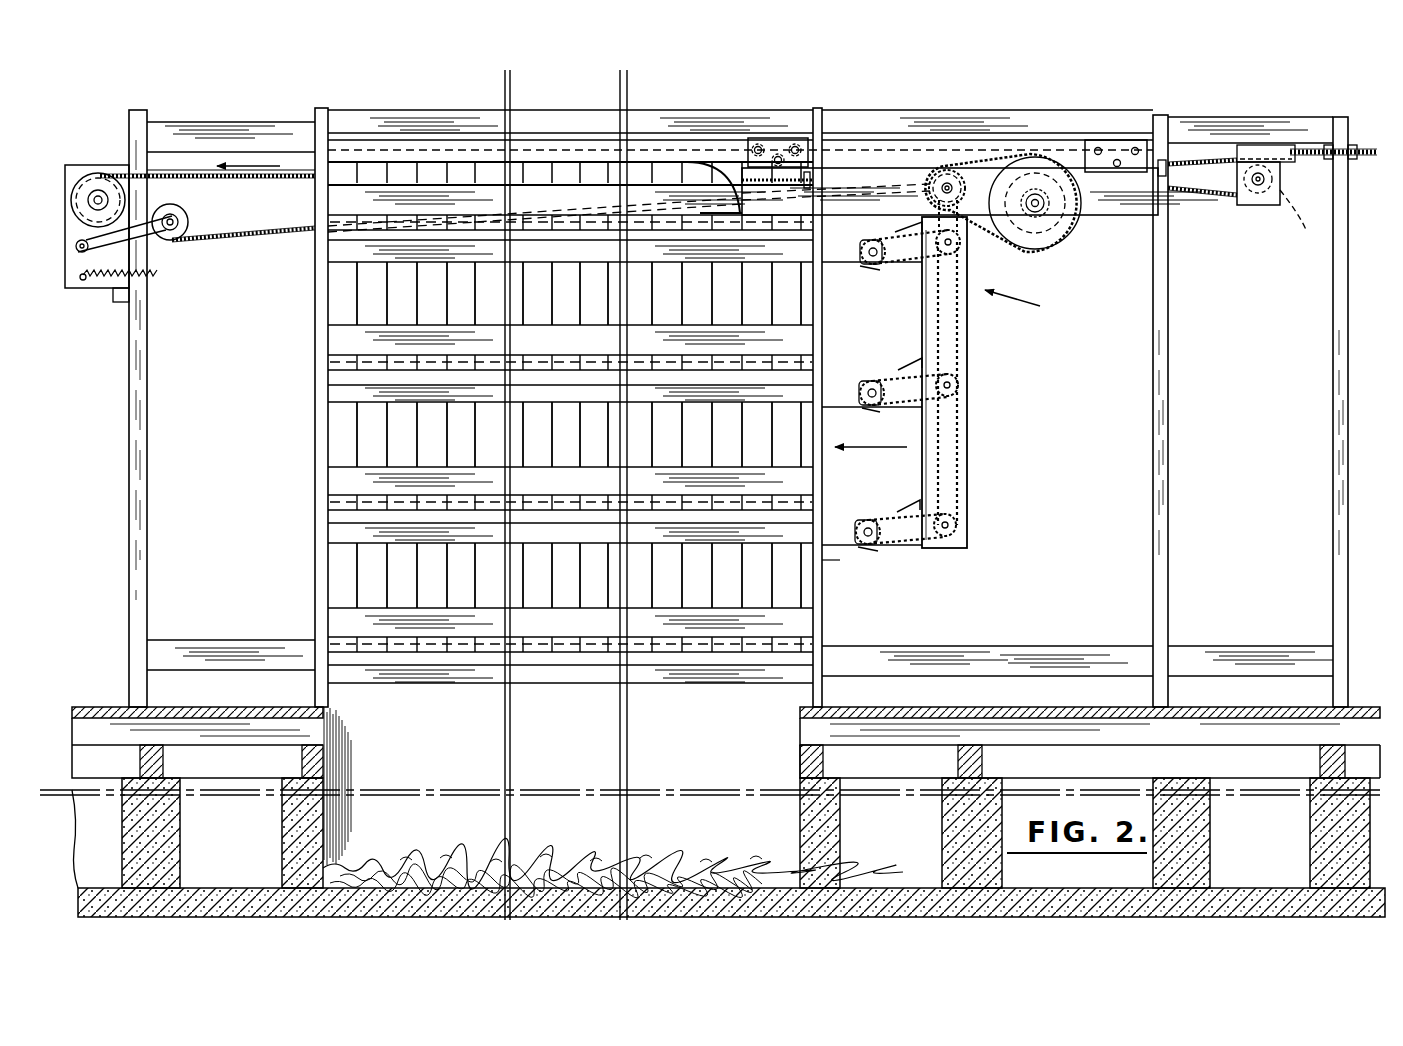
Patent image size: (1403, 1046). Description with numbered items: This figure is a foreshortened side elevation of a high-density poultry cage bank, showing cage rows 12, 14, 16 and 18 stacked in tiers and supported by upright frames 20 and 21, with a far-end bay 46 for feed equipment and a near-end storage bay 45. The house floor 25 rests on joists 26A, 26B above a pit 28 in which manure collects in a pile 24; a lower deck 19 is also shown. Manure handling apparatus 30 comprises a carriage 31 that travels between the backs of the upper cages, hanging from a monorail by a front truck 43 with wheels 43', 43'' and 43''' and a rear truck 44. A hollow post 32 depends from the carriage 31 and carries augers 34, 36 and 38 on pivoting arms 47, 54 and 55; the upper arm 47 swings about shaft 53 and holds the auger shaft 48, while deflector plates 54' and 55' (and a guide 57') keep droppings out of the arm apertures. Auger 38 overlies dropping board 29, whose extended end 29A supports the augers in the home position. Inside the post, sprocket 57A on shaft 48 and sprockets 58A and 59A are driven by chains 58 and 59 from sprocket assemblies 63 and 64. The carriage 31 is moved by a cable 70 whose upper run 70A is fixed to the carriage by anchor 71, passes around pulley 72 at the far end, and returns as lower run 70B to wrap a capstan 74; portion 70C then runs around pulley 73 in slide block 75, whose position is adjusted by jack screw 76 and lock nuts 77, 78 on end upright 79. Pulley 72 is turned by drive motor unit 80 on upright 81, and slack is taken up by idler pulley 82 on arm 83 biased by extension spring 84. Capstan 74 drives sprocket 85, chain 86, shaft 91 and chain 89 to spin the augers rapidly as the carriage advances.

The cage row 12 is at (392, 177).
The cage row 14 is at (352, 300).
The cage row 16 is at (352, 407).
The cage row 18 is at (352, 560).
The lower deck member 19 is at (352, 628).
The upright frame 20 is at (320, 432).
The upright frame 21 is at (815, 583).
The manure pile 24 is at (656, 858).
The floor 25 is at (1000, 716).
The joist 26A is at (1245, 726).
The joist 26B is at (818, 762).
The pit 28 is at (802, 802).
The dropping board 29 is at (352, 523).
The dropping board extension 29A is at (830, 545).
The manure handling apparatus 30 is at (1026, 306).
The carriage 31 is at (1125, 216).
The post portion 32 is at (968, 343).
The auger blade 34 is at (872, 291).
The auger blade 36 is at (860, 354).
The auger blade 38 is at (858, 545).
The truck 43 is at (778, 124).
The wheel 43' is at (733, 117).
The wheel 43'' is at (827, 117).
The wheel 43''' is at (796, 122).
The truck 44 is at (1115, 140).
The storage bay 45 is at (1160, 573).
The bay 46 is at (175, 482).
The upper arm 47 is at (905, 264).
The auger shaft 48 is at (860, 250).
The shaft 53 is at (962, 247).
The middle auger arm 54 is at (909, 405).
The deflector plate 54' is at (902, 342).
The bottom auger arm 55 is at (906, 545).
The deflector plate 55' is at (901, 484).
The chain guide 57' is at (874, 228).
The sprocket 57A is at (868, 264).
The chain 58 is at (880, 372).
The auger shaft sprocket 58A is at (875, 404).
The chain 59 is at (880, 518).
The auger shaft sprocket 59A is at (875, 548).
The triple sprocket assembly 63 is at (958, 388).
The double sprocket assembly 64 is at (960, 512).
The cable 70 is at (258, 180).
The upper run 70A is at (200, 165).
The lower run 70B is at (212, 242).
The cable portion 70C is at (1204, 198).
The anchor 71 is at (812, 168).
The pulley 72 is at (85, 178).
The pulley 73 is at (1300, 217).
The capstan 74 is at (1050, 236).
The slide block 75 is at (1262, 208).
The threaded adjusting rod 76 is at (1320, 148).
The lock nut 77 is at (1326, 159).
The lock nut 78 is at (1358, 158).
The end upright 79 is at (1342, 263).
The drive motor and gear reduction unit 80 is at (100, 165).
The upright 81 is at (140, 400).
The idler pulley 82 is at (186, 218).
The arm 83 is at (76, 248).
The extension spring 84 is at (100, 280).
The drive sprocket 85 is at (1025, 240).
The chain 86 is at (1010, 160).
The chain 89 is at (951, 172).
The common shaft 91 is at (945, 182).